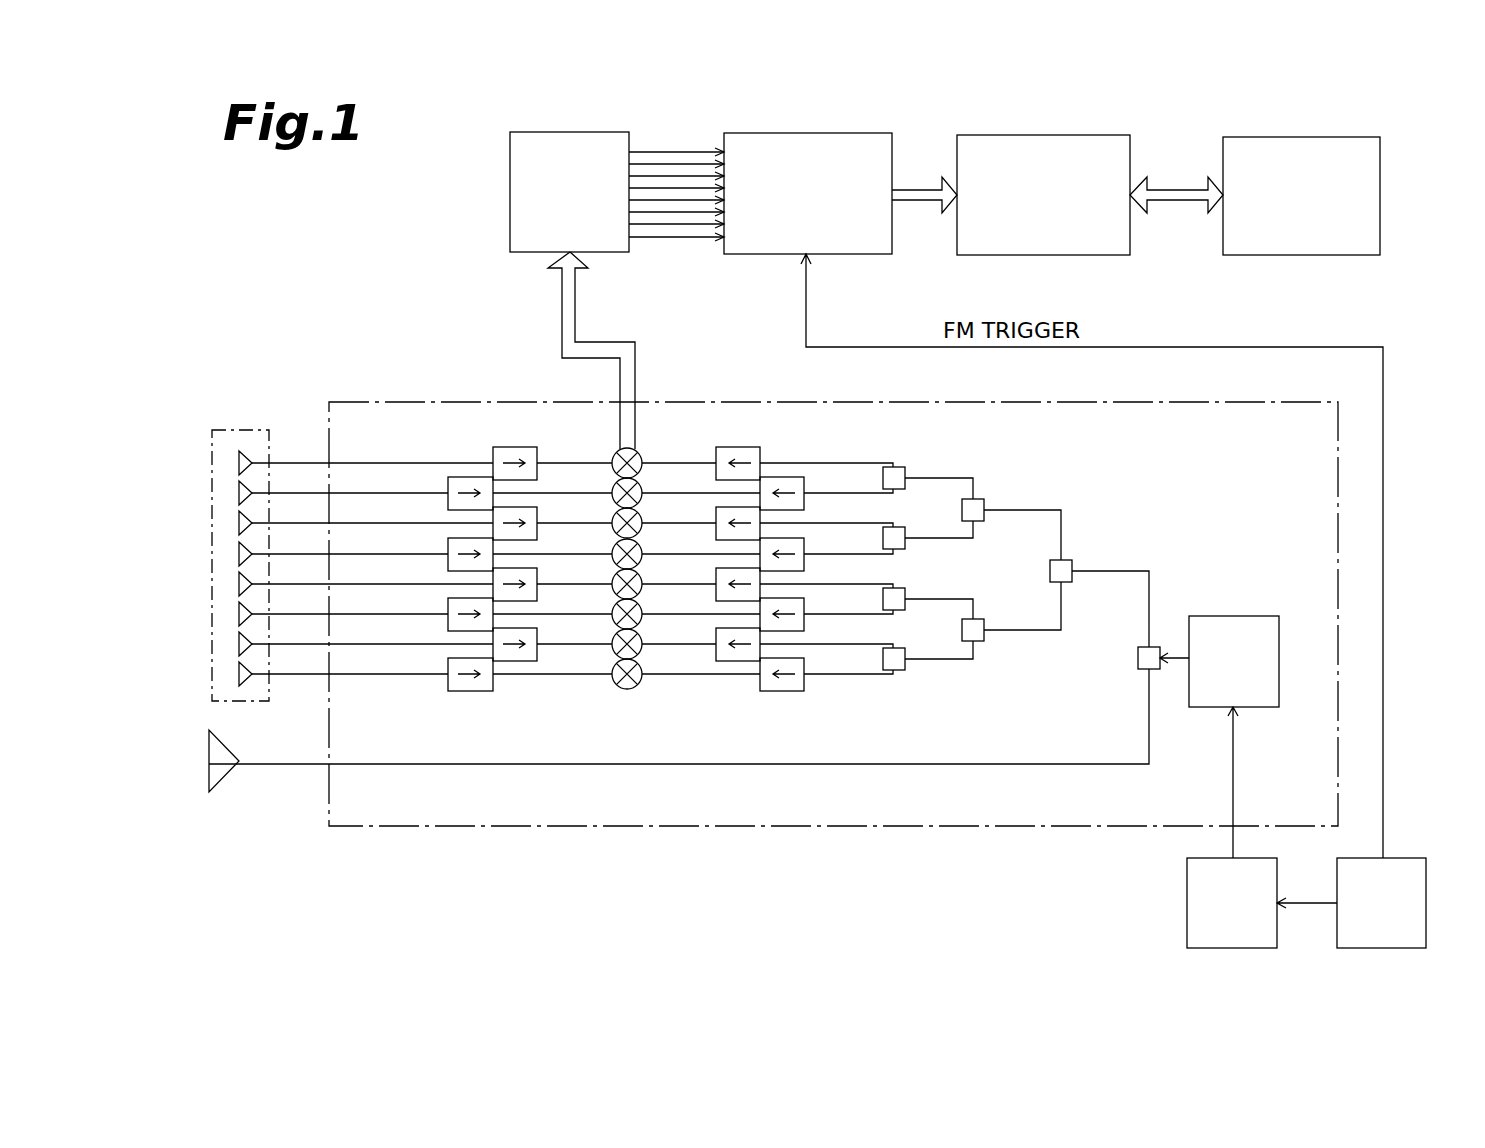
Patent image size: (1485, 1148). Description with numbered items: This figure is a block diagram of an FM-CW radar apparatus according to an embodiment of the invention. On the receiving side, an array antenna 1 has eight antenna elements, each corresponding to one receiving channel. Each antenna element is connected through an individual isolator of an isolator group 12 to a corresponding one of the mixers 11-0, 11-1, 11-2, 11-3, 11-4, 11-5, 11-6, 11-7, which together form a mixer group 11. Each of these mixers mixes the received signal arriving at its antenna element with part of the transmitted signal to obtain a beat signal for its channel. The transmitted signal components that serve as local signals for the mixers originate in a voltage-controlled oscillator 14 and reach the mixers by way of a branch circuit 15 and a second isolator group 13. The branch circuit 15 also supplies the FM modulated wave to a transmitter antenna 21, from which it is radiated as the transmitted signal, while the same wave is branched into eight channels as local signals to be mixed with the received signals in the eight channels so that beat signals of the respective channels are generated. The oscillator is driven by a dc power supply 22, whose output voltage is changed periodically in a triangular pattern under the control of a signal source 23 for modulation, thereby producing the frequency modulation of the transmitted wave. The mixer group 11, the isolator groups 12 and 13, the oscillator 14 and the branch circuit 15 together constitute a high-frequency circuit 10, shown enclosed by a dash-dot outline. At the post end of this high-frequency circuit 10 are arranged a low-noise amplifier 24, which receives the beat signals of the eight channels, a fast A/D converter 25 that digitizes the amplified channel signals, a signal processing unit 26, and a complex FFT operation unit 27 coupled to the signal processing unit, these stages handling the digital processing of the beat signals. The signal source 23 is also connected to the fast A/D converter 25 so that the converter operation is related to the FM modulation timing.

The array antenna 1 is at (230, 420).
The high-frequency circuit 10 is at (413, 403).
The mixer group 11 is at (646, 592).
The mixer 11-0 is at (641, 456).
The mixer 11-1 is at (641, 486).
The mixer 11-2 is at (641, 516).
The mixer 11-3 is at (641, 547).
The mixer 11-4 is at (641, 577).
The mixer 11-5 is at (641, 607).
The mixer 11-6 is at (641, 637).
The mixer 11-7 is at (595, 703).
The isolator group 12 is at (545, 703).
The isolator group 13 is at (808, 703).
The voltage-controlled oscillator 14 is at (1255, 614).
The branch circuit 15 is at (1167, 448).
The transmitter antenna 21 is at (228, 775).
The dc power supply 22 is at (1187, 868).
The signal source 23 is at (1400, 860).
The low-noise amplifier 24 is at (578, 131).
The fast A/D converter 25 is at (850, 132).
The signal processing unit 26 is at (1080, 134).
The complex FFT operation unit 27 is at (1330, 135).